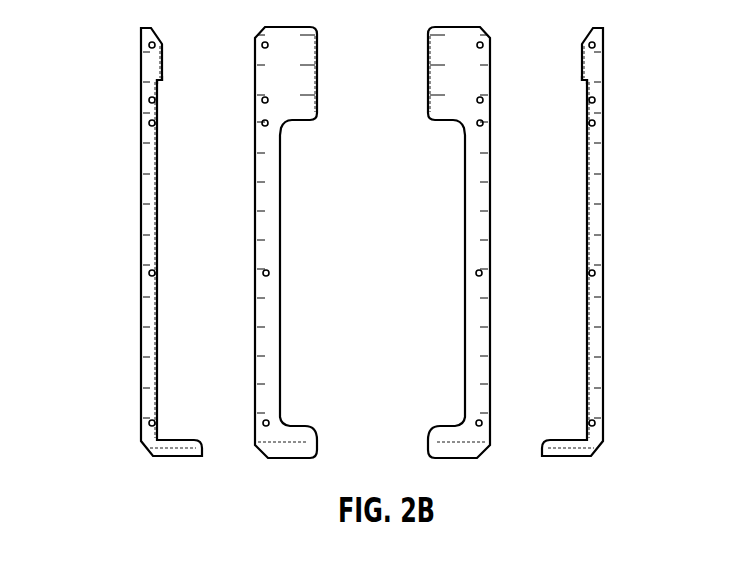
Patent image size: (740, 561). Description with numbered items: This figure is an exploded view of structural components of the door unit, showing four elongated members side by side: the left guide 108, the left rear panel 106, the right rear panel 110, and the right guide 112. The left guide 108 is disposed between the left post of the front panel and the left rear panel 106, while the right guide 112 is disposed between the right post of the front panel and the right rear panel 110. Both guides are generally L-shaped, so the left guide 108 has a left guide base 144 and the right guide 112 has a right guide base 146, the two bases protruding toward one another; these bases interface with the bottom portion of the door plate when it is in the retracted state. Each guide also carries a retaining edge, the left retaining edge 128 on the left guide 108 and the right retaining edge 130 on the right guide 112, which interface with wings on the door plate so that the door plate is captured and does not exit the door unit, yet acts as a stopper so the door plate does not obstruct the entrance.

The left rear panel 106 is at (265, 33).
The left guide 108 is at (147, 33).
The right rear panel 110 is at (484, 33).
The right guide 112 is at (603, 33).
The left retaining edge 128 is at (161, 84).
The right retaining edge 130 is at (584, 84).
The left guide base 144 is at (173, 447).
The right guide base 146 is at (566, 447).